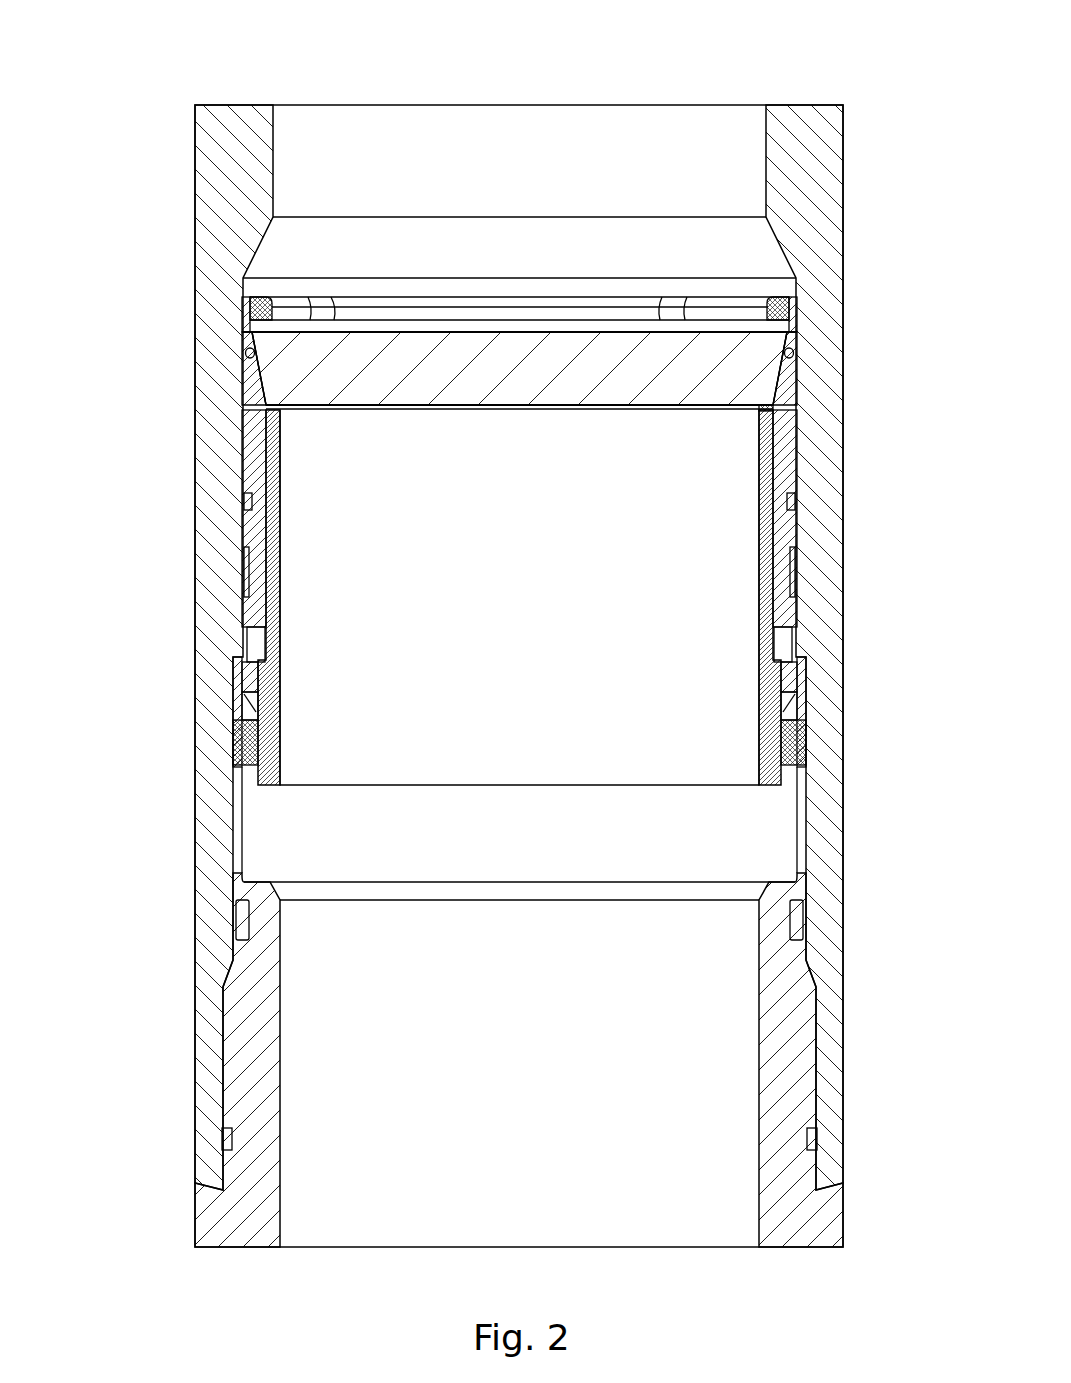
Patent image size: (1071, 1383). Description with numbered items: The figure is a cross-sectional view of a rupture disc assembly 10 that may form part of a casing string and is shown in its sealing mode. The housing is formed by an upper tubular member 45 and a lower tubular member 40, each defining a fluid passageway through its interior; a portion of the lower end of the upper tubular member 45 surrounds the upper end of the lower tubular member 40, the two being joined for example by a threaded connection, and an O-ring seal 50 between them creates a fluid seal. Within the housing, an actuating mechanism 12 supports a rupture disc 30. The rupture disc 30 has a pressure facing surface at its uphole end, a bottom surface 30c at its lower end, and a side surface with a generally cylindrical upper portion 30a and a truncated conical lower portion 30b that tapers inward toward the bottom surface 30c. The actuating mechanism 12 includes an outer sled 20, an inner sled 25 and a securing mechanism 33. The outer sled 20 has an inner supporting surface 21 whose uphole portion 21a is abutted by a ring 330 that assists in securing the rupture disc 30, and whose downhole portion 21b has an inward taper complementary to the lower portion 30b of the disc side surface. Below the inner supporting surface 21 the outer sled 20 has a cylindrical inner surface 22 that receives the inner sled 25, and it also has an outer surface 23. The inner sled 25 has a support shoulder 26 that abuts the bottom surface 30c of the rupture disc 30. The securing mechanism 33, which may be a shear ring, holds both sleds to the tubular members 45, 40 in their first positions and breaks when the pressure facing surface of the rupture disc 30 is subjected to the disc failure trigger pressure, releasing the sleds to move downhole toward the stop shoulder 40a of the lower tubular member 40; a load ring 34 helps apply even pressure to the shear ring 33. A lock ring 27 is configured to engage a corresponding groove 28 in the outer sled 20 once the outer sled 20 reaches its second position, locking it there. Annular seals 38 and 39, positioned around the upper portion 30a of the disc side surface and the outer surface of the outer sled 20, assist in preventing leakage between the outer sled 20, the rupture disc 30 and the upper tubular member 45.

The rupture disc assembly 10 is at (118, 46).
The actuating mechanism 12 is at (195, 767).
The outer sled 20 is at (523, 498).
The inner supporting surface 21 is at (782, 370).
The uphole portion of inner supporting surface 21a is at (786, 323).
The downhole portion of inner supporting surface 21b is at (784, 382).
The cylindrical inner surface 22 is at (770, 463).
The outer surface 23 is at (532, 587).
The inner sled 25 is at (745, 555).
The support shoulder 26 is at (763, 402).
The lock ring 27 is at (808, 675).
The groove 28 is at (243, 575).
The rupture disc 30 is at (515, 338).
The upper portion of side surface 30a is at (270, 348).
The lower portion of side surface 30b is at (273, 387).
The bottom surface 30c is at (313, 408).
The securing mechanism 33 is at (797, 738).
The load ring 34 is at (250, 708).
The annular seal 38 is at (250, 352).
The annular seal 39 is at (795, 506).
The lower tubular member 40 is at (521, 1007).
The stop shoulder 40a is at (255, 873).
The upper tubular member 45 is at (807, 207).
The O-ring seal 50 is at (800, 918).
The ring 330 is at (283, 307).